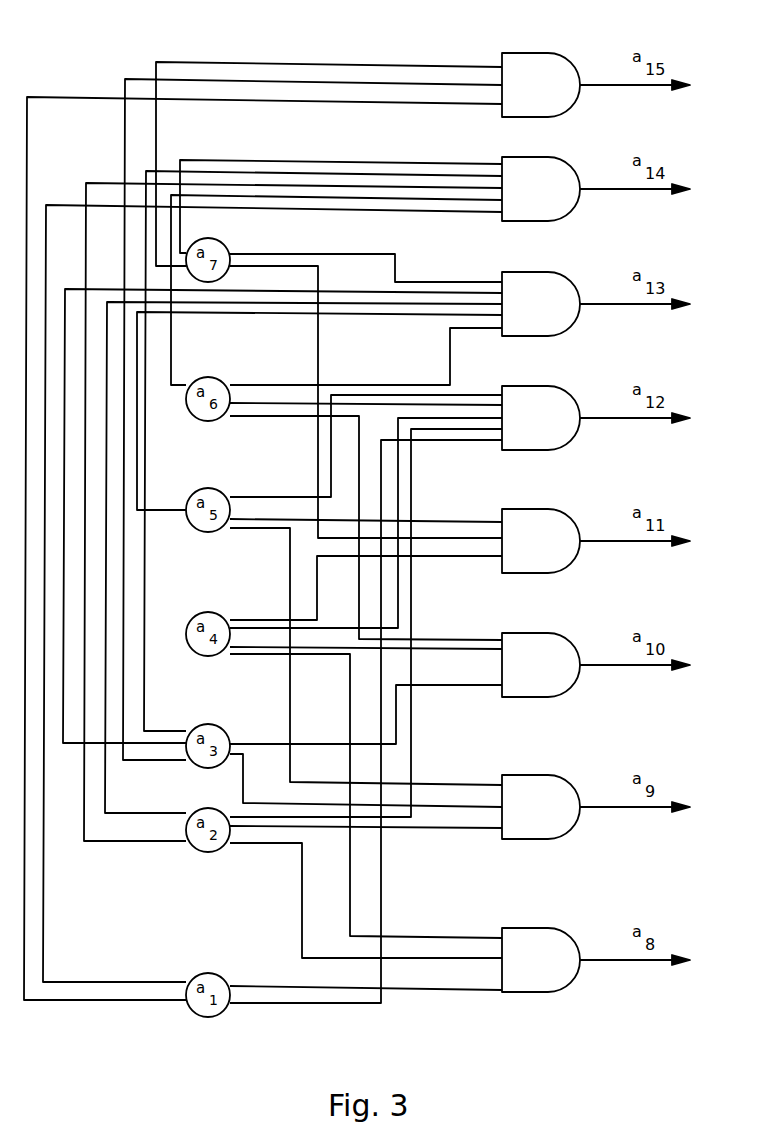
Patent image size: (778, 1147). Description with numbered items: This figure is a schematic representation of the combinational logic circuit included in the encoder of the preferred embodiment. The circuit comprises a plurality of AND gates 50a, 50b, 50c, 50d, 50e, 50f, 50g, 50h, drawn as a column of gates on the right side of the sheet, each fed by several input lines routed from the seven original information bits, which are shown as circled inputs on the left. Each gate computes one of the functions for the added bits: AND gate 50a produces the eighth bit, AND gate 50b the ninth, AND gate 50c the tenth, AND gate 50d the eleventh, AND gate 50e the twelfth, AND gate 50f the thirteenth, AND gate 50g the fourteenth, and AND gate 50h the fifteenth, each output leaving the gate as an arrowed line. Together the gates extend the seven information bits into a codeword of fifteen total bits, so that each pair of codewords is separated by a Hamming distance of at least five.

The AND gate 50a is at (566, 928).
The AND gate 50b is at (566, 775).
The AND gate 50c is at (566, 633).
The AND gate 50d is at (566, 509).
The AND gate 50e is at (566, 386).
The AND gate 50f is at (566, 272).
The AND gate 50g is at (566, 157).
The AND gate 50h is at (566, 53).